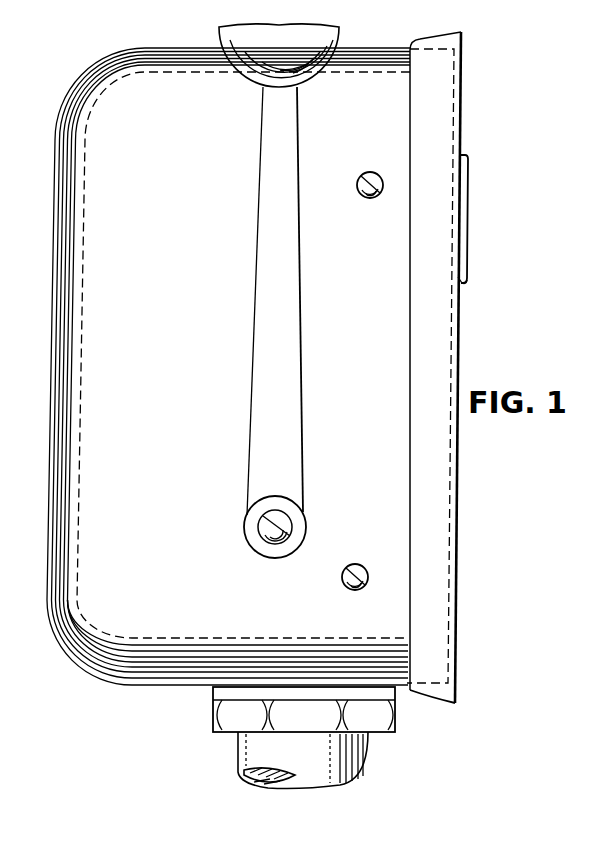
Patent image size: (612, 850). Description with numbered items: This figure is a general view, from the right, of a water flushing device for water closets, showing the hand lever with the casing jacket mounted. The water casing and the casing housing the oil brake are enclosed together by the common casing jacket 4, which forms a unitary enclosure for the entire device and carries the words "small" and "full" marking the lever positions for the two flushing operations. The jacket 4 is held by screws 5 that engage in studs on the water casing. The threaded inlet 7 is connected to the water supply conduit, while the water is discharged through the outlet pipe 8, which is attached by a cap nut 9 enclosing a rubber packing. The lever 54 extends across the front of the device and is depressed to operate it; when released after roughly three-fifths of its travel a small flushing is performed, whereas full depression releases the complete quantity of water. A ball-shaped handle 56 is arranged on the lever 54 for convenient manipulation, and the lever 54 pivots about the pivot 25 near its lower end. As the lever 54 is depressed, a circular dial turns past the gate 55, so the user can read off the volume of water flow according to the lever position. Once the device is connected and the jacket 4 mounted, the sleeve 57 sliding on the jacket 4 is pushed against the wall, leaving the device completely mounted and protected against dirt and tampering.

The casing jacket 4 is at (395, 157).
The screws 5 is at (383, 188).
The threaded inlet 7 is at (463, 283).
The outlet pipe 8 is at (358, 762).
The cap nut 9 is at (375, 715).
The pivot screw 25 is at (290, 540).
The lever 54 is at (281, 128).
The gate 55 is at (53, 325).
The ball-shaped handle 56 is at (338, 35).
The sleeve 57 is at (431, 232).